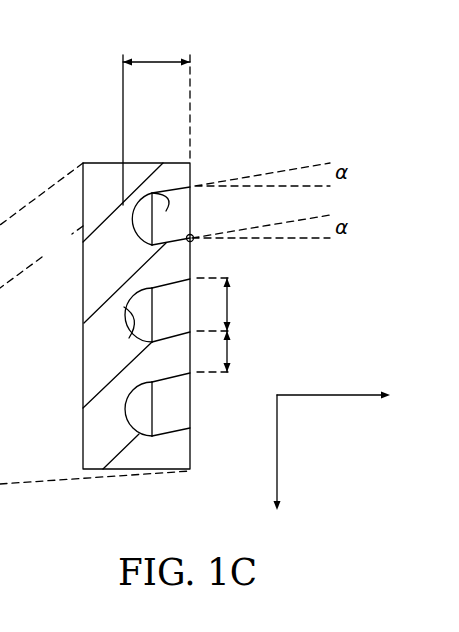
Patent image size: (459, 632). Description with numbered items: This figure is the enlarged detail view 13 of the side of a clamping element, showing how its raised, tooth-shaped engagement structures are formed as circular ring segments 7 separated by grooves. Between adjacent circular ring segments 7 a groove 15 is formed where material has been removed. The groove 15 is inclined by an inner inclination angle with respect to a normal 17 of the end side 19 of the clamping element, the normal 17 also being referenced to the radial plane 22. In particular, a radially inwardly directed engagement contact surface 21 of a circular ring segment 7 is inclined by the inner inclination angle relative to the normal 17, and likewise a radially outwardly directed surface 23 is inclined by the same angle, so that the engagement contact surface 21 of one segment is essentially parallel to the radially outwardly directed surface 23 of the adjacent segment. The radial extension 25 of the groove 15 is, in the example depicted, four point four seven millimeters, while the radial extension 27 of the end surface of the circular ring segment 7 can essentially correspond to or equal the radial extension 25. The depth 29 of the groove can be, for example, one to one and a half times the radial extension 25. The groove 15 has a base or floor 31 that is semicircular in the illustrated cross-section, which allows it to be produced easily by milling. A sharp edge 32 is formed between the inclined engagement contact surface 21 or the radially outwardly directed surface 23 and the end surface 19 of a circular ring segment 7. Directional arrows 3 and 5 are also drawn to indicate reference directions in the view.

The first axial direction 3 is at (333, 394).
The second radial direction 5 is at (277, 452).
The engagement structure 7 is at (190, 258).
The detail view 13 is at (72, 135).
The groove 15 is at (174, 219).
The normal 17 is at (292, 187).
The end side 19 is at (199, 169).
The radially inwardly directed engagement contact surface 21 is at (123, 205).
The radial plane 22 is at (190, 88).
The radially outwardly directed surface 23 is at (130, 231).
The radial extension of the groove 25 is at (228, 302).
The radial extension of the end surface 27 is at (228, 348).
The depth of the groove 29 is at (157, 62).
The base or floor 31 is at (135, 338).
The sharp edge 32 is at (193, 241).